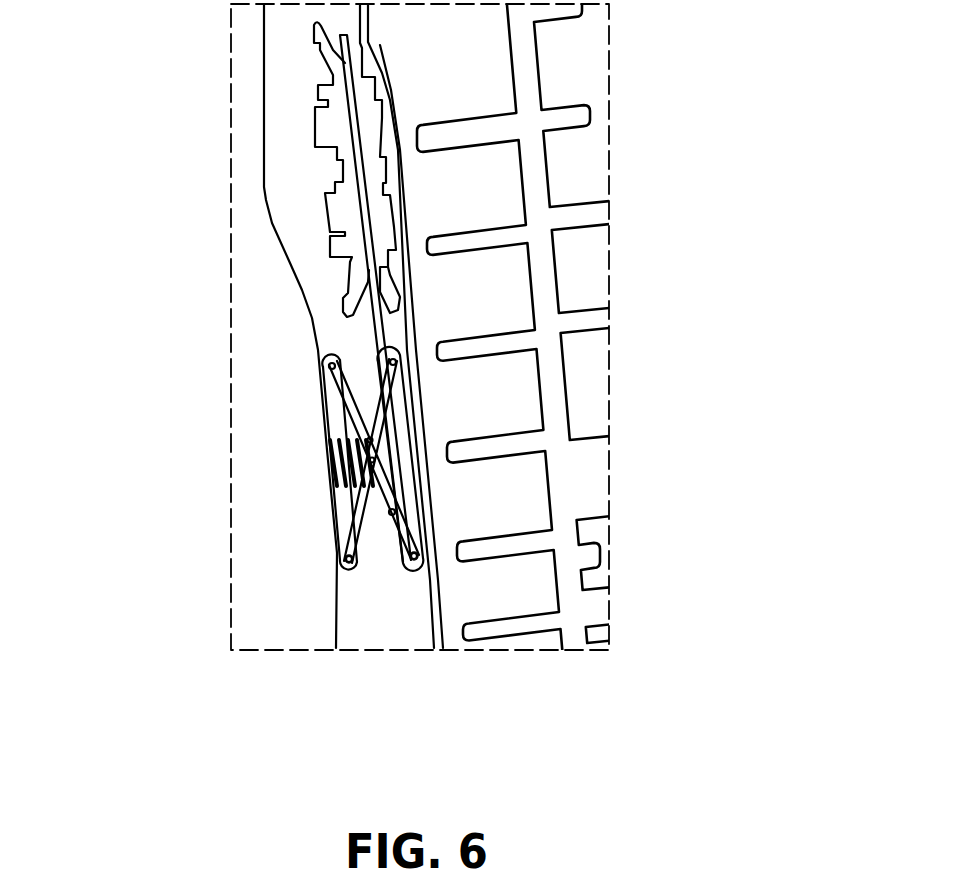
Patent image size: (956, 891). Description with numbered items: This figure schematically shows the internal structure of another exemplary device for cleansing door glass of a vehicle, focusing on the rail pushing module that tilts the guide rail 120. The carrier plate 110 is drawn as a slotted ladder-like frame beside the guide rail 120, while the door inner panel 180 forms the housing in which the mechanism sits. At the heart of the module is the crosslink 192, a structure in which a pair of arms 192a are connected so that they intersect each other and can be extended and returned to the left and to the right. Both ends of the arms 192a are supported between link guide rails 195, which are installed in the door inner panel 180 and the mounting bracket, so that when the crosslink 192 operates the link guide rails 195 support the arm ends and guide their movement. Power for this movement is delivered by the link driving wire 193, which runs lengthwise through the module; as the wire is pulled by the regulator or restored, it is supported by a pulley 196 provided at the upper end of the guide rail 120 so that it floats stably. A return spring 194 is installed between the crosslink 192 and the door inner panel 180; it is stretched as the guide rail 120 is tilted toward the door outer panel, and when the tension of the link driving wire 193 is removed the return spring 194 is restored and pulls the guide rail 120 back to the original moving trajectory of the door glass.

The carrier plate 110 is at (586, 331).
The guide rail 120 is at (557, 326).
The door inner panel 180 is at (244, 326).
The crosslink 192 is at (363, 600).
The arms 192a is at (360, 567).
The link driving wire 193 is at (271, 298).
The return spring 194 is at (249, 472).
The link guide rails 195 is at (433, 459).
The pulley 196 is at (274, 169).